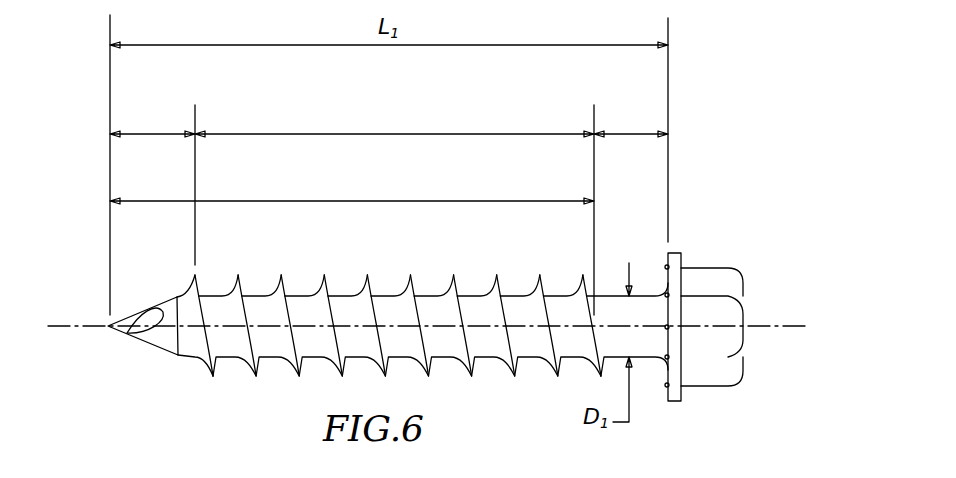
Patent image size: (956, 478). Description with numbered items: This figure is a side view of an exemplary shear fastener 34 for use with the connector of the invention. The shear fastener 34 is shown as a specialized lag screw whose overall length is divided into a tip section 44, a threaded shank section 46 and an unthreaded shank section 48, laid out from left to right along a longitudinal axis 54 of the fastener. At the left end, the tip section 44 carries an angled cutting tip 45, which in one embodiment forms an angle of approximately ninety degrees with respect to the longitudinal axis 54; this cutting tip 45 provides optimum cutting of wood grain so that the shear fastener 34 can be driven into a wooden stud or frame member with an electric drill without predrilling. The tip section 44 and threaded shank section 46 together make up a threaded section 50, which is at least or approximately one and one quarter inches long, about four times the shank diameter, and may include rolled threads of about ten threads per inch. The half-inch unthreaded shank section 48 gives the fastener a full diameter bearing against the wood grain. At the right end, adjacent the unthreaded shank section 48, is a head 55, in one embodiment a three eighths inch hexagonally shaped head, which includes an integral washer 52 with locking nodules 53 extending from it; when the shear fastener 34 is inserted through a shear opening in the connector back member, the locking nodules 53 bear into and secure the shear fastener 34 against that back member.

The shear fastener 34 is at (763, 130).
The tip section 44 is at (152, 185).
The cutting tip 45 is at (128, 333).
The threaded shank section 46 is at (394, 210).
The unthreaded shank section 48 is at (631, 122).
The threaded section 50 is at (352, 189).
The integral washer 52 is at (682, 252).
The locking nodules 53 is at (666, 268).
The longitudinal axis 54 is at (73, 325).
The head 55 is at (743, 300).